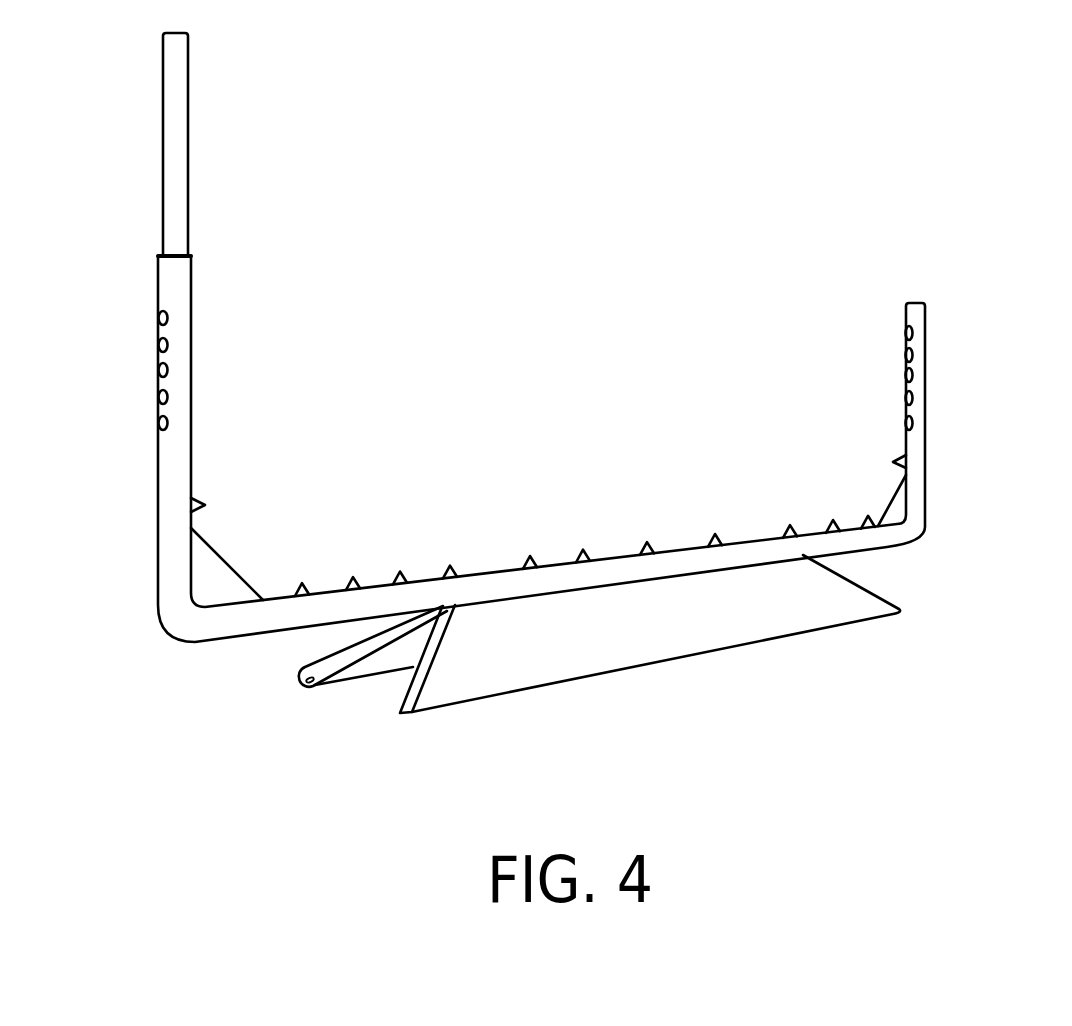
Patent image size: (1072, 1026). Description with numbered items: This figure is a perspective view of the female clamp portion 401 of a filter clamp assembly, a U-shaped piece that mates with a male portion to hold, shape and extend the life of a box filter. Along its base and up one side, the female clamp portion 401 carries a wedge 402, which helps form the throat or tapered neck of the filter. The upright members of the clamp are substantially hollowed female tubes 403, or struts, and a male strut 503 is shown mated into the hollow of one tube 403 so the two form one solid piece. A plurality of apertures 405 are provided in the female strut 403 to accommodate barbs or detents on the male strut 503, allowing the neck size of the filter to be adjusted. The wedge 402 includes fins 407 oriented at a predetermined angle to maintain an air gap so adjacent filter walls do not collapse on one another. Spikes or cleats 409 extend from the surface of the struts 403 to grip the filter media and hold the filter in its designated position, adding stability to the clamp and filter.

The female clamp portion 401 is at (536, 449).
The wedge 402 is at (630, 648).
The female tube 403 is at (192, 387).
The apertures 405 is at (163, 318).
The fins 407 is at (400, 713).
The spikes 409 is at (448, 574).
The male strut 503 is at (176, 145).